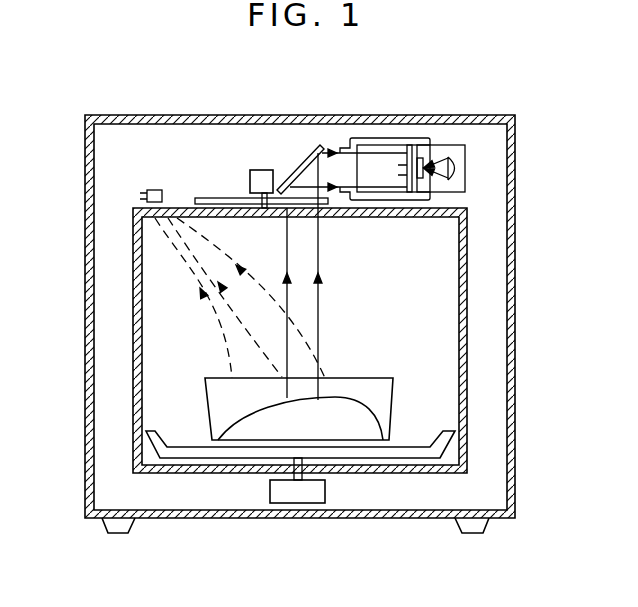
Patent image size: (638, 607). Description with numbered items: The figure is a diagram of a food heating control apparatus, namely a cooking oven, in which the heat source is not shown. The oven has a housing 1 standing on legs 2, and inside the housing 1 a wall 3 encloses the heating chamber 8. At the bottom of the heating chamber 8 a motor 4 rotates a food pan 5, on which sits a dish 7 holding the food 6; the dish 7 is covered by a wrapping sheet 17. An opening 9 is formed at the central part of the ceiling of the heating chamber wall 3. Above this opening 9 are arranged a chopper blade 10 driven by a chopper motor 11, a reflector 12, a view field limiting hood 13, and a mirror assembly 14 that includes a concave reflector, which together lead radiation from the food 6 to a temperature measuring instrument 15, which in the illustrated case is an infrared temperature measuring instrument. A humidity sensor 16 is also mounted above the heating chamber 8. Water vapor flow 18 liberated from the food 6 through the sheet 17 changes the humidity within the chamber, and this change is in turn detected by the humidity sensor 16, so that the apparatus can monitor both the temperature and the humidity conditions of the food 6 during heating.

The housing 1 is at (85, 396).
The legs 2 is at (128, 534).
The wall of the heating chamber 3 is at (467, 264).
The motor 4 is at (295, 503).
The food pan 5 is at (147, 432).
The food 6 is at (355, 405).
The dish 7 is at (387, 408).
The heating chamber 8 is at (407, 292).
The opening 9 is at (300, 213).
The chopper blade 10 is at (208, 197).
The chopper motor 11 is at (262, 170).
The reflector 12 is at (318, 146).
The view field limiting hood 13 is at (397, 137).
The mirror assembly 14 is at (462, 145).
The temperature measuring instrument 15 is at (430, 180).
The humidity sensor 16 is at (155, 190).
The wrapping sheet 17 is at (200, 407).
The water vapor flow 18 is at (205, 270).